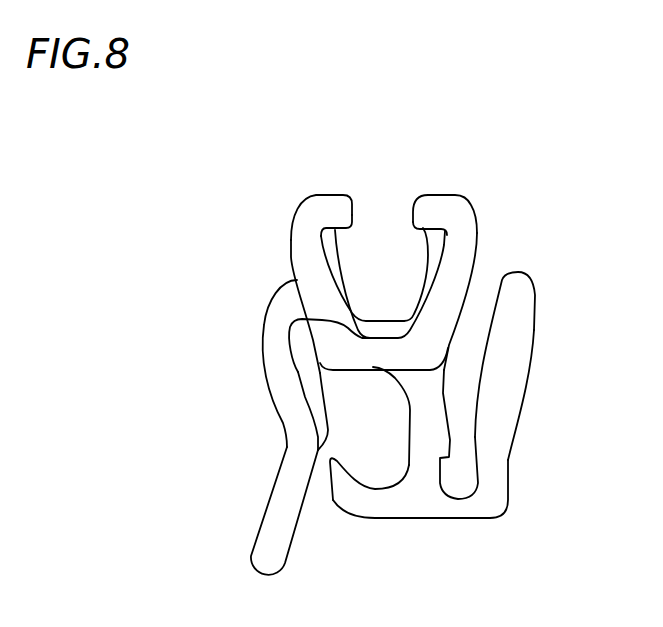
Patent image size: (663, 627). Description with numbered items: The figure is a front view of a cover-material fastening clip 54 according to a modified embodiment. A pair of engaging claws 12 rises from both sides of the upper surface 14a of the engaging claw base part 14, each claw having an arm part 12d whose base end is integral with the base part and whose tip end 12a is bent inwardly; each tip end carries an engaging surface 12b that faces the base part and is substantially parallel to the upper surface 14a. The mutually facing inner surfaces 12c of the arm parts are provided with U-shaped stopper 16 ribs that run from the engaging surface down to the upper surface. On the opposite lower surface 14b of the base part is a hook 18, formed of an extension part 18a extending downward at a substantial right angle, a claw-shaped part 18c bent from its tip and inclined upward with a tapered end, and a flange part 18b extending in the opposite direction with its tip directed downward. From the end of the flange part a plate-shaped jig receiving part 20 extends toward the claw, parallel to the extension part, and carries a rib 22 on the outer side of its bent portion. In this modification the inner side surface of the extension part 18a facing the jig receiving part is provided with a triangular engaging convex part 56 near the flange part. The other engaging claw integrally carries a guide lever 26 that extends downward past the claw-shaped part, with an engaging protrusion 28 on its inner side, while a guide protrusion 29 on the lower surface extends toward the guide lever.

The cover-material fastening clip 54 is at (503, 162).
The engaging claw 12 is at (318, 298).
The tip end 12a is at (333, 193).
The engaging surface 12b is at (333, 224).
The inner surface 12c is at (310, 273).
The arm part 12d is at (360, 337).
The engaging claw base part 14 is at (358, 352).
The upper surface 14a is at (320, 318).
The lower surface 14b is at (382, 375).
The stopper 16 is at (322, 302).
The hook 18 is at (420, 503).
The extension part 18a is at (422, 413).
The flange part 18b is at (465, 520).
The claw-shaped part 18c is at (334, 512).
The jig receiving part 20 is at (495, 482).
The rib 22 is at (482, 378).
The guide lever 26 is at (273, 537).
The engaging protrusion 28 is at (318, 436).
The guide protrusion 29 is at (352, 367).
The engaging convex part 56 is at (444, 445).